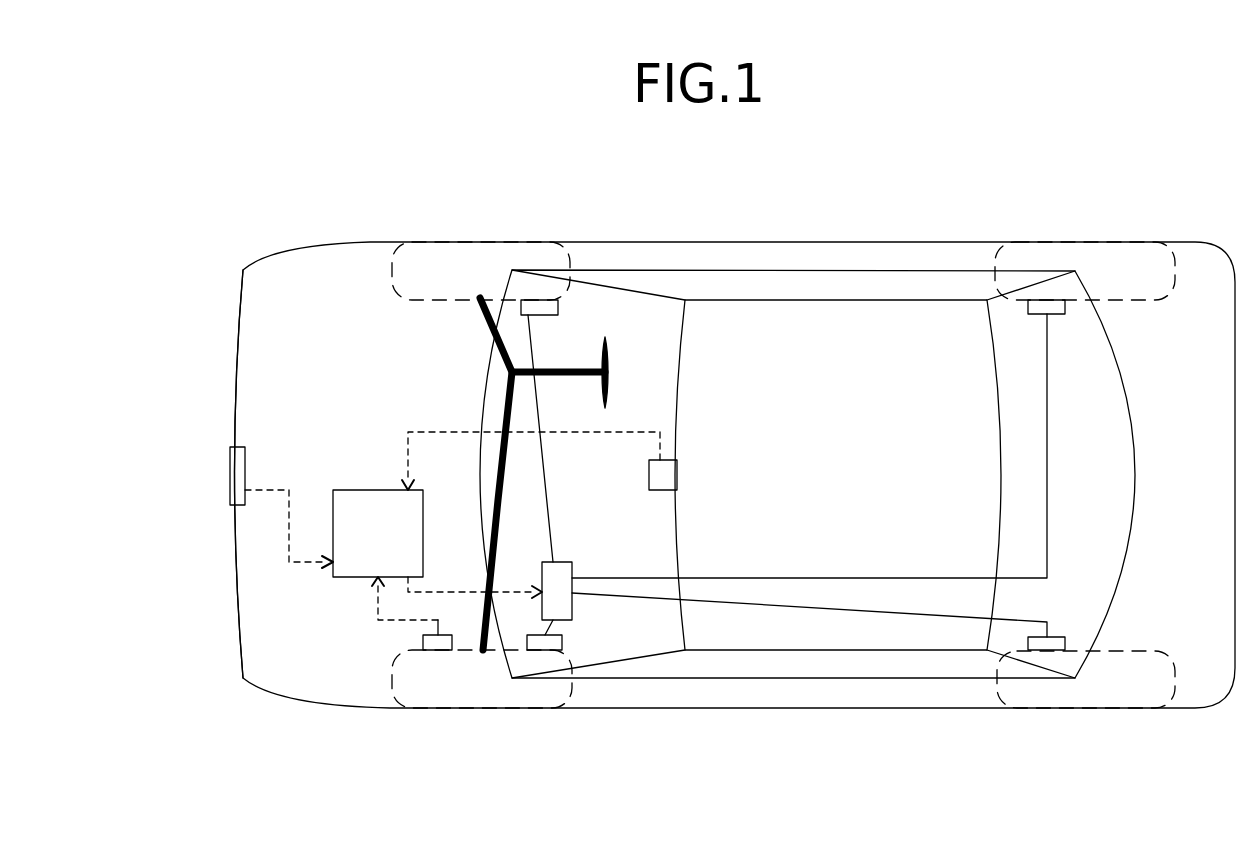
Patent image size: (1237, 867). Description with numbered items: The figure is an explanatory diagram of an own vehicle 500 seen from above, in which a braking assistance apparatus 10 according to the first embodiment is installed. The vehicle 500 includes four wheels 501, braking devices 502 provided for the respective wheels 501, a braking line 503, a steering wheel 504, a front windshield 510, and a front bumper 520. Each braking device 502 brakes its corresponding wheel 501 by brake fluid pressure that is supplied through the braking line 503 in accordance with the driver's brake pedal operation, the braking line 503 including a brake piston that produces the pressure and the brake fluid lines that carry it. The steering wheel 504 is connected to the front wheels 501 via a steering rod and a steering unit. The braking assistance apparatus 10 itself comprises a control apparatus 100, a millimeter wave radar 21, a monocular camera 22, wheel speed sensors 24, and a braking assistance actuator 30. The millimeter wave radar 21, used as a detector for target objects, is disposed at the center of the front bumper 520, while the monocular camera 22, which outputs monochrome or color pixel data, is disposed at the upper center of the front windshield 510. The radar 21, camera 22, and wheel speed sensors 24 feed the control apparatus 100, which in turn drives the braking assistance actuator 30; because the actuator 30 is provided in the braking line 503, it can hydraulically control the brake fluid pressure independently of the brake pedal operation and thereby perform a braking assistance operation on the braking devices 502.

The vehicle 500 is at (808, 230).
The wheels 501 is at (505, 242).
The braking devices 502 is at (545, 308).
The braking line 503 is at (548, 500).
The steering wheel 504 is at (607, 345).
The front windshield 510 is at (672, 412).
The front bumper 520 is at (237, 333).
The braking assistance apparatus 10 is at (291, 637).
The millimeter wave radar 21 is at (236, 477).
The monocular camera 22 is at (663, 475).
The wheel speed sensors 24 is at (423, 641).
The braking assistance actuator 30 is at (557, 591).
The control apparatus 100 is at (378, 533).